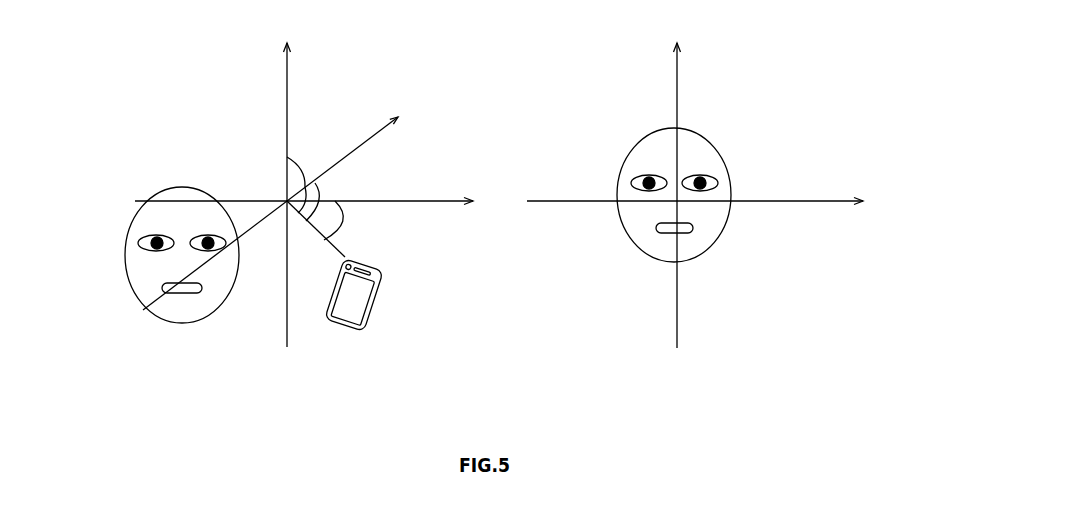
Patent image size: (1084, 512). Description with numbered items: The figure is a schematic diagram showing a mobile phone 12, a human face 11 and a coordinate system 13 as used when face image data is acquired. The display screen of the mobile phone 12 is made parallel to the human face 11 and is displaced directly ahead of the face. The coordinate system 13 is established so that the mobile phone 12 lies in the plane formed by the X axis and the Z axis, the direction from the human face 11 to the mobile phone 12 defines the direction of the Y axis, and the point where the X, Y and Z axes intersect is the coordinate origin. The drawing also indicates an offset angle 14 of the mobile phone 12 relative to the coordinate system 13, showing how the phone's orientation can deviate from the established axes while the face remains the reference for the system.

The human face 11 is at (232, 310).
The mobile phone 12 is at (409, 266).
The coordinate system 13 is at (310, 103).
The offset angle 14 is at (313, 163).